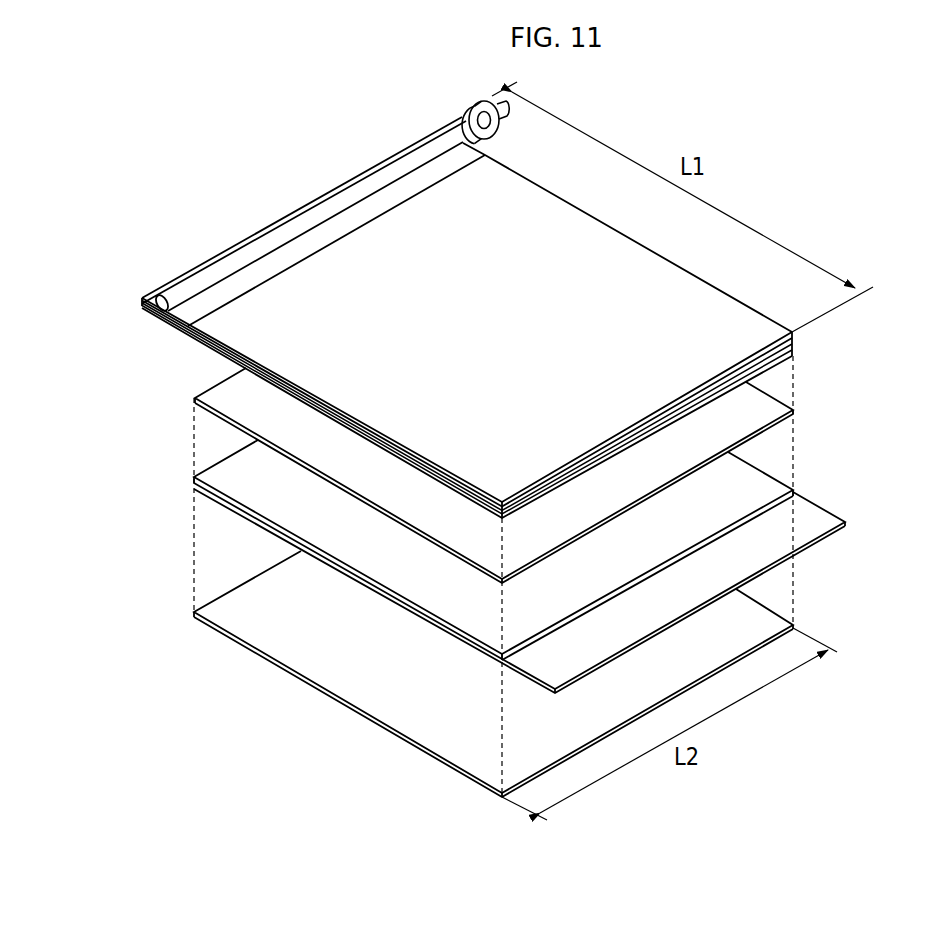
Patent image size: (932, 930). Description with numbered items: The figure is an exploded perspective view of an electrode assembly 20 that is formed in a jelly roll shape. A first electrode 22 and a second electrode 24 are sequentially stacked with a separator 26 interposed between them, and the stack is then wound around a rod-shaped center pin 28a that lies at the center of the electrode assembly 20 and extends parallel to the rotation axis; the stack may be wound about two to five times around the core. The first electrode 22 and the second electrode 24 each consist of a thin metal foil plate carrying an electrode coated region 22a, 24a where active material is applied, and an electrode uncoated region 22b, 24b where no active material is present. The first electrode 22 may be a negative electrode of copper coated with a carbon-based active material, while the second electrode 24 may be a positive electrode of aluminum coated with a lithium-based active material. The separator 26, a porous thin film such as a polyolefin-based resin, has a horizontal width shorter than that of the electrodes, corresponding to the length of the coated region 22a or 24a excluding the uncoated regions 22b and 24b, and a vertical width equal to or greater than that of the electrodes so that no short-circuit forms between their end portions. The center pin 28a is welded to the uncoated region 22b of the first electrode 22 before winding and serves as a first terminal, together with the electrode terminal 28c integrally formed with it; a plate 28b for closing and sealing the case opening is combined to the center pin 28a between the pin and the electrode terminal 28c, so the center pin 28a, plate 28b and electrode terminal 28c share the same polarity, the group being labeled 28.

The electrode assembly 20 is at (212, 121).
The first electrode 22 is at (109, 319).
The first electrode coated region 22a is at (182, 352).
The first electrode uncoated region 22b is at (186, 311).
The second electrode 24 is at (897, 469).
The second electrode coated region 24a is at (770, 477).
The second electrode uncoated region 24b is at (820, 518).
The separator 26 is at (236, 425).
The terminal assembly 28 is at (452, 35).
The center pin 28a is at (407, 160).
The plate 28b is at (462, 108).
The electrode terminal 28c is at (485, 99).